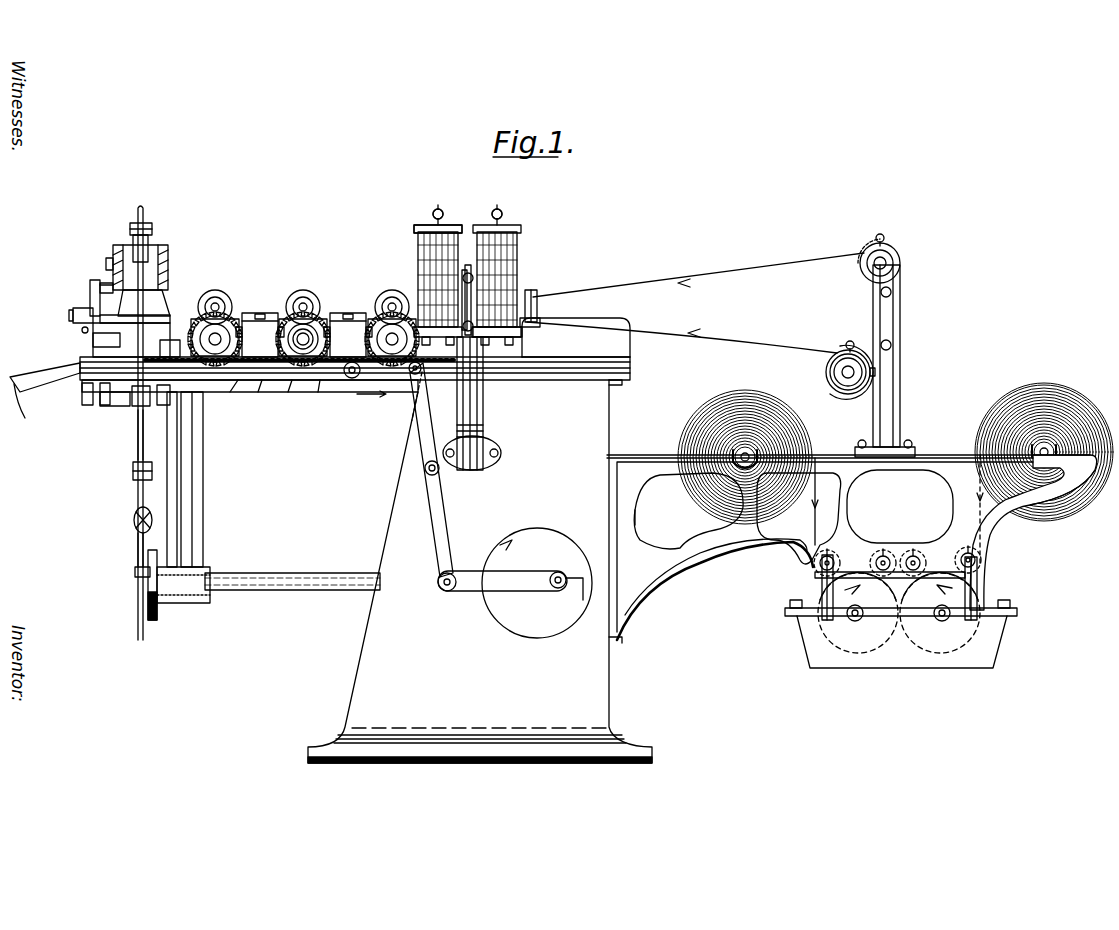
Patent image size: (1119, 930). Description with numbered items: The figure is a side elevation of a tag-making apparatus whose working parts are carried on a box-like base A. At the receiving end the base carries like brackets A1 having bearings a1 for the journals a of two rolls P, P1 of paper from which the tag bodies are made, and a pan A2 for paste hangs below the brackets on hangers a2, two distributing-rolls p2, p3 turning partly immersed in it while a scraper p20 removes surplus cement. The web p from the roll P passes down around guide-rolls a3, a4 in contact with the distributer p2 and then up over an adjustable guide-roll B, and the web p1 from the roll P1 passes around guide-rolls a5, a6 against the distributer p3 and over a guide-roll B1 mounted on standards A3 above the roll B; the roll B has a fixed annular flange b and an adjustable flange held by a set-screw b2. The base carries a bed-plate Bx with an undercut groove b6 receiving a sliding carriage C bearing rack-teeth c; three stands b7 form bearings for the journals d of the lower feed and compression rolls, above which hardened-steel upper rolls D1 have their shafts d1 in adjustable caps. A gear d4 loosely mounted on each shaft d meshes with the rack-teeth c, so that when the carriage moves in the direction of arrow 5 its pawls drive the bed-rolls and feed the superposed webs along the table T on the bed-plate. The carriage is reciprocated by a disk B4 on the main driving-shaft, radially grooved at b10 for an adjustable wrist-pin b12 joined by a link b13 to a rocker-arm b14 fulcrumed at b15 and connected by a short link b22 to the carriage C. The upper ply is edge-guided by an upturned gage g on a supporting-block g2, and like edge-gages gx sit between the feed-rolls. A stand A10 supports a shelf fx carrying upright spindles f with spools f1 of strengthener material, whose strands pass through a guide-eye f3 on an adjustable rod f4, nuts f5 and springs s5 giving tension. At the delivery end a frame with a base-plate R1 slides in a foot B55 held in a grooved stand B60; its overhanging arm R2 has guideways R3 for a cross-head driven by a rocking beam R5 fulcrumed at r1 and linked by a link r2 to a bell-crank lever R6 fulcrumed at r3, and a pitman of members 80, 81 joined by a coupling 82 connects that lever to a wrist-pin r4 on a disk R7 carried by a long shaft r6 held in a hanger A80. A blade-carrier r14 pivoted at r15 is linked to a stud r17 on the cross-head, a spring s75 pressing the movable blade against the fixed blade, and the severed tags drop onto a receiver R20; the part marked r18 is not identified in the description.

The base A is at (380, 628).
The bracket A1 is at (752, 540).
The pan A2 is at (905, 660).
The standard A3 is at (898, 365).
The upturned stand A10 is at (487, 410).
The hanger A80 is at (203, 502).
The adjustable guide-roll B is at (826, 372).
The guide-roll B1 is at (902, 258).
The disk B4 is at (534, 530).
The foot B55 is at (93, 345).
The longitudinally-grooved stand B60 is at (127, 400).
The bed-plate Bx is at (318, 392).
The sliding carriage C is at (329, 431).
The upper feed and compression roll D1 is at (392, 292).
The roll of paper P is at (800, 425).
The roll of paper P1 is at (1040, 392).
The base-plate R1 is at (117, 338).
The overhanging arm R2 is at (150, 297).
The guideway R3 is at (160, 244).
The rocking beam R5 is at (137, 220).
The bell-crank lever R6 is at (140, 433).
The disk R7 is at (152, 620).
The receiver R20 is at (29, 412).
The table T is at (587, 323).
The journal a is at (1080, 395).
The bearing a1 is at (1053, 462).
The hanger a2 is at (822, 585).
The guide-roll a3 is at (820, 565).
The guide-roll a4 is at (880, 557).
The guide-roll a5 is at (983, 560).
The guide-roll a6 is at (913, 555).
The fixed annular flange b is at (838, 360).
The set-screw b2 is at (850, 341).
The undercut groove b6 is at (573, 363).
The stand b7 is at (230, 392).
The radial groove b10 is at (584, 600).
The wrist-pin b12 is at (560, 572).
The link b13 is at (505, 585).
The rocker-arm b14 is at (437, 510).
The fulcrum b15 is at (425, 470).
The short link b22 is at (410, 420).
The rack-teeth c is at (258, 392).
The journal d is at (288, 392).
The shaft d1 is at (345, 310).
The gear d4 is at (392, 410).
The upright spindle f is at (500, 213).
The spool f1 is at (518, 227).
The guide-eye f3 is at (440, 280).
The rod f4 is at (518, 270).
The nut f5 is at (433, 213).
The shelf fx is at (505, 332).
The upturned gage g is at (537, 298).
The supporting-block g2 is at (530, 325).
The edge-gage gx is at (367, 313).
The web p is at (815, 505).
The web p1 is at (983, 500).
The distributing-roll p2 is at (885, 600).
The distributing-roll p3 is at (963, 640).
The scraper p20 is at (1015, 612).
The fulcrum r1 is at (151, 226).
The link r2 is at (150, 280).
The fulcrum r3 is at (135, 400).
The wrist-pin r4 is at (135, 573).
The long shaft r6 is at (297, 588).
The blade-carrier r14 is at (100, 292).
The pivot stud r15 is at (72, 317).
The stud r17 is at (110, 262).
The pipe r18 is at (107, 268).
The spring s5 is at (497, 213).
The spring s75 is at (82, 325).
The arrow 5 is at (352, 378).
The pitman member 80 is at (138, 545).
The pitman member 81 is at (140, 493).
The coupling 82 is at (136, 520).